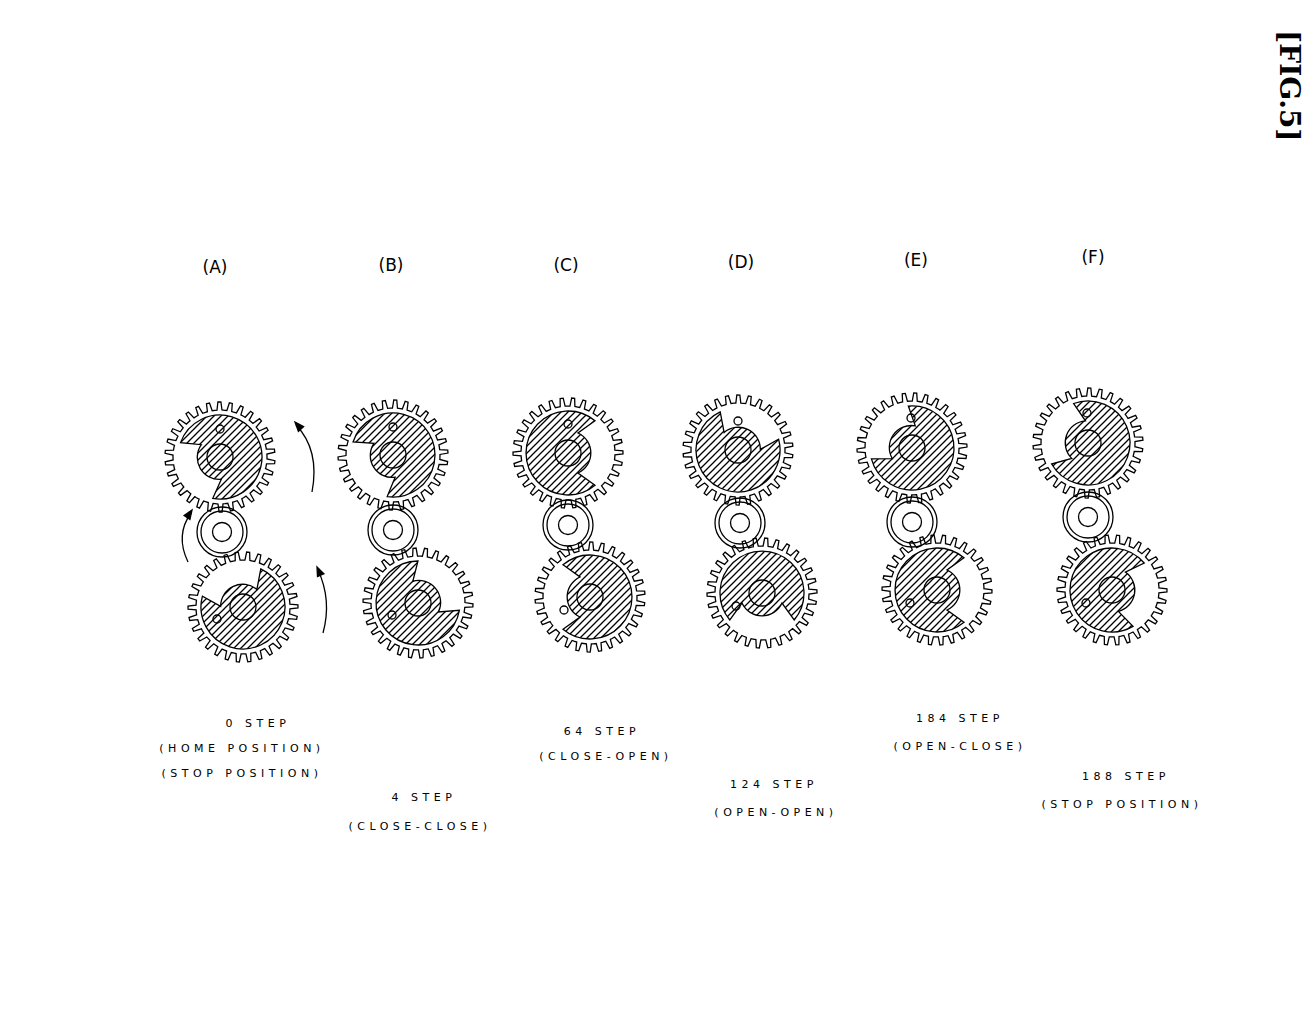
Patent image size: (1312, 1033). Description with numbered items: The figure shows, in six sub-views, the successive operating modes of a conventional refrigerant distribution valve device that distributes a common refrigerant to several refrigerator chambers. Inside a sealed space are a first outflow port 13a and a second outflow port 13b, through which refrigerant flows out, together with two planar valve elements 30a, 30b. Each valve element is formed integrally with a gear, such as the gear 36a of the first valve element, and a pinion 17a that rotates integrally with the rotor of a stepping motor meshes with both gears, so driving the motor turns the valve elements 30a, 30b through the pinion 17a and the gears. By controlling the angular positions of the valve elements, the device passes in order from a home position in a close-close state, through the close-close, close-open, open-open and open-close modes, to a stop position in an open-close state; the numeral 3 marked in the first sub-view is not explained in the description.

The shutter drive unit 3 is at (250, 420).
The first outflow port 13a is at (216, 425).
The second outflow port 13b is at (215, 623).
The pinion 17a is at (245, 528).
The first planar valve element 30a is at (257, 488).
The second planar valve element 30b is at (267, 647).
The gear 36a is at (177, 438).